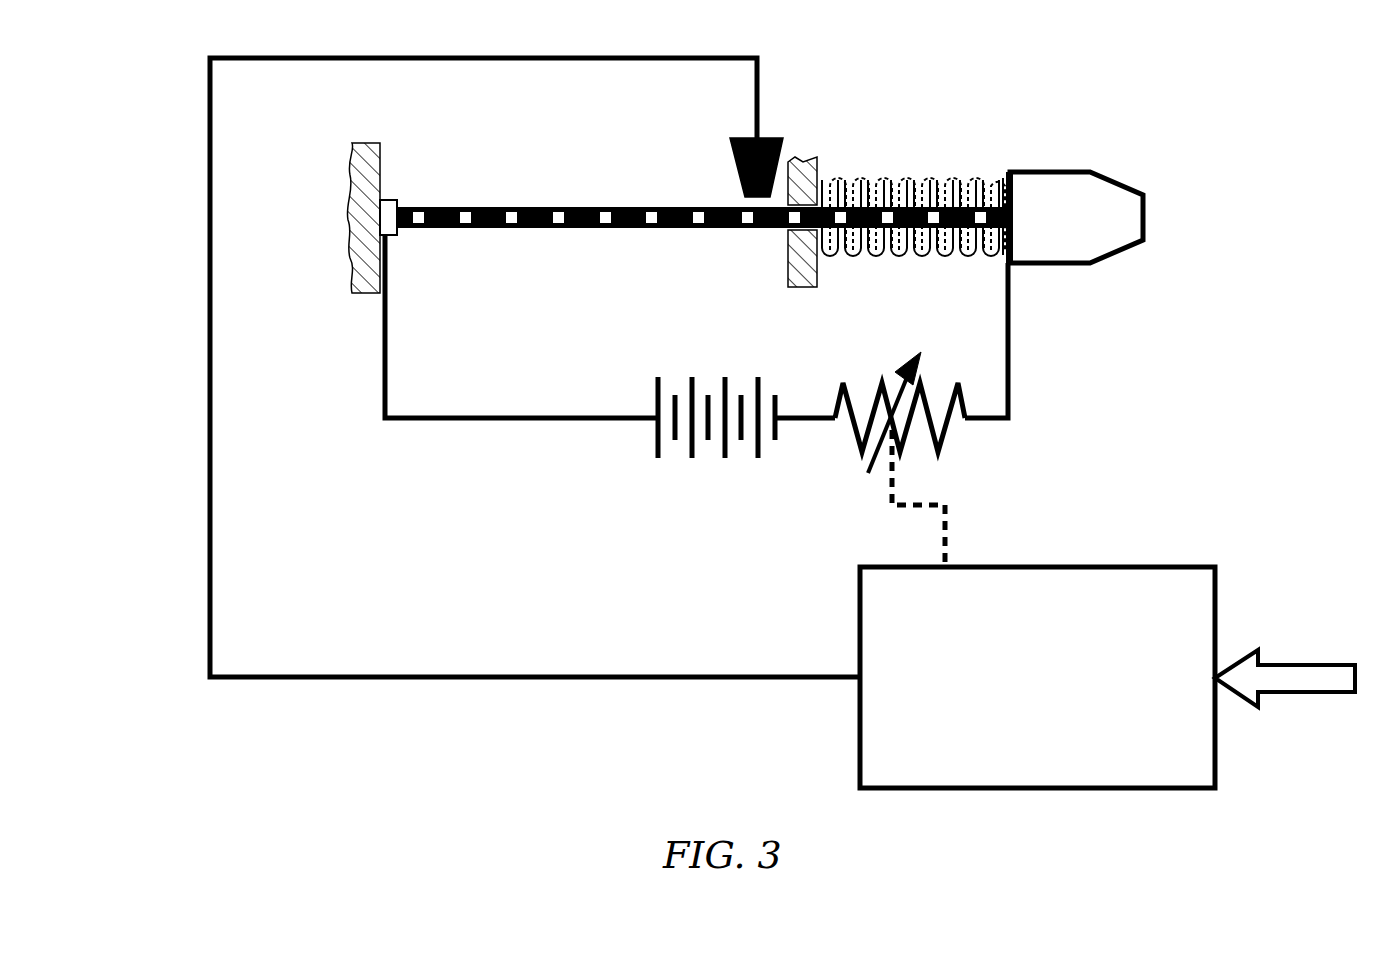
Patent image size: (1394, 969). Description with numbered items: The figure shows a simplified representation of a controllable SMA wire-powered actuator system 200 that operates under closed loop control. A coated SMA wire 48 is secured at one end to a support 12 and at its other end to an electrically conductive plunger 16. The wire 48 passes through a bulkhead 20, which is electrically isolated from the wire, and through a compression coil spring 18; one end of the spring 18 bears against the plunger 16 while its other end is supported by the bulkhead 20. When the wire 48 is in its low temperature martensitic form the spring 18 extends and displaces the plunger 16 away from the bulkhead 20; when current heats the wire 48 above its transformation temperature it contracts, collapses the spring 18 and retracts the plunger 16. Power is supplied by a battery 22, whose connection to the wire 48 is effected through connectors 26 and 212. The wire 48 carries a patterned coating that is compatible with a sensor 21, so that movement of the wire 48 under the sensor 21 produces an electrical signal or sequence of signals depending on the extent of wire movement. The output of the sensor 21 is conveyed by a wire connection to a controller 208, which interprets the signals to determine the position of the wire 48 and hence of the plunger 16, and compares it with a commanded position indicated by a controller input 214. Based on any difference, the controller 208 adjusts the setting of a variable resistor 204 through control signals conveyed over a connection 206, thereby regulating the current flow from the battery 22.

The support 12 is at (352, 158).
The plunger 16 is at (1112, 180).
The compression coil spring 18 is at (922, 183).
The bulkhead 20 is at (800, 160).
The sensor 21 is at (730, 163).
The battery 22 is at (688, 448).
The connector 26 is at (392, 236).
The coated SMA wire 48 is at (582, 206).
The controllable SMA actuator system 200 is at (1188, 300).
The variable resistor 204 is at (952, 420).
The connection 206 is at (948, 545).
The controller 208 is at (1037, 677).
The connector 212 is at (999, 190).
The controller input 214 is at (1293, 664).